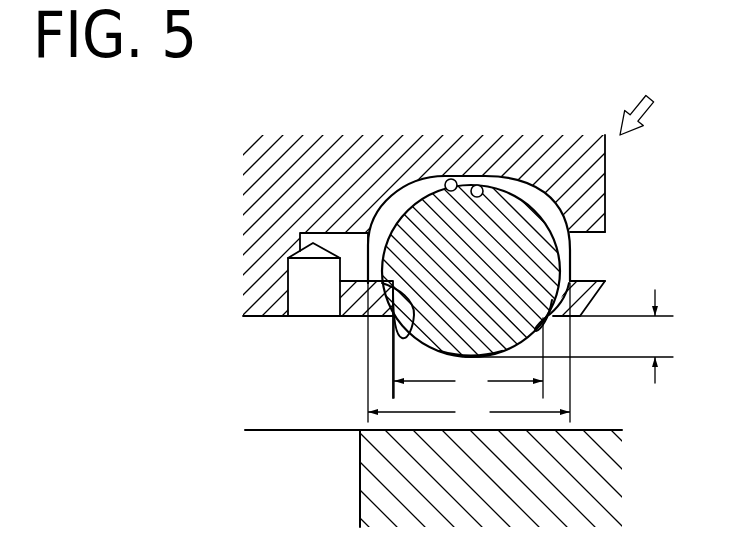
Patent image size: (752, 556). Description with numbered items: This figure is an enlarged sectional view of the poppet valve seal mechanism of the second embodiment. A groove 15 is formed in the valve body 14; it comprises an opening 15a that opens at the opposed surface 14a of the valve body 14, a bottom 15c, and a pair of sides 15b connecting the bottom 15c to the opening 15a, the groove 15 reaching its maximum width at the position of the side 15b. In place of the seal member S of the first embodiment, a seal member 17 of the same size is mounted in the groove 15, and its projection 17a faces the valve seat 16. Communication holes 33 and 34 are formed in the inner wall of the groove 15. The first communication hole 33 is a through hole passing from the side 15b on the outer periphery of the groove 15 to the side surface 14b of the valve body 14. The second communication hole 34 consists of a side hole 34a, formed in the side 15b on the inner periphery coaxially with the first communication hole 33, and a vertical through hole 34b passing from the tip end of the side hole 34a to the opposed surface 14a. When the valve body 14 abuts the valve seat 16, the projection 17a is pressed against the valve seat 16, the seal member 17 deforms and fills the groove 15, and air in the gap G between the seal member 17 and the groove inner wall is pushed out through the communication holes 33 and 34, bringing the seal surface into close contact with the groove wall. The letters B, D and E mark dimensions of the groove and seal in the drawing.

The valve body 14 is at (318, 182).
The opposed surface 14a is at (268, 317).
The side surface 14b is at (607, 167).
The groove 15 is at (472, 180).
The opening 15a is at (545, 318).
The sides 15b is at (393, 334).
The bottom 15c is at (445, 178).
The valve seat 16 is at (510, 430).
The seal member 17 is at (498, 231).
The projection 17a is at (462, 356).
The first communication hole 33 is at (605, 240).
The second communication hole 34 is at (318, 318).
The side hole 34a is at (358, 248).
The vertical through hole 34b is at (313, 281).
The seal member S is at (650, 98).
The gap G is at (565, 258).
The width dimension B is at (468, 359).
The width dimension D is at (469, 355).
The height dimension E is at (570, 336).